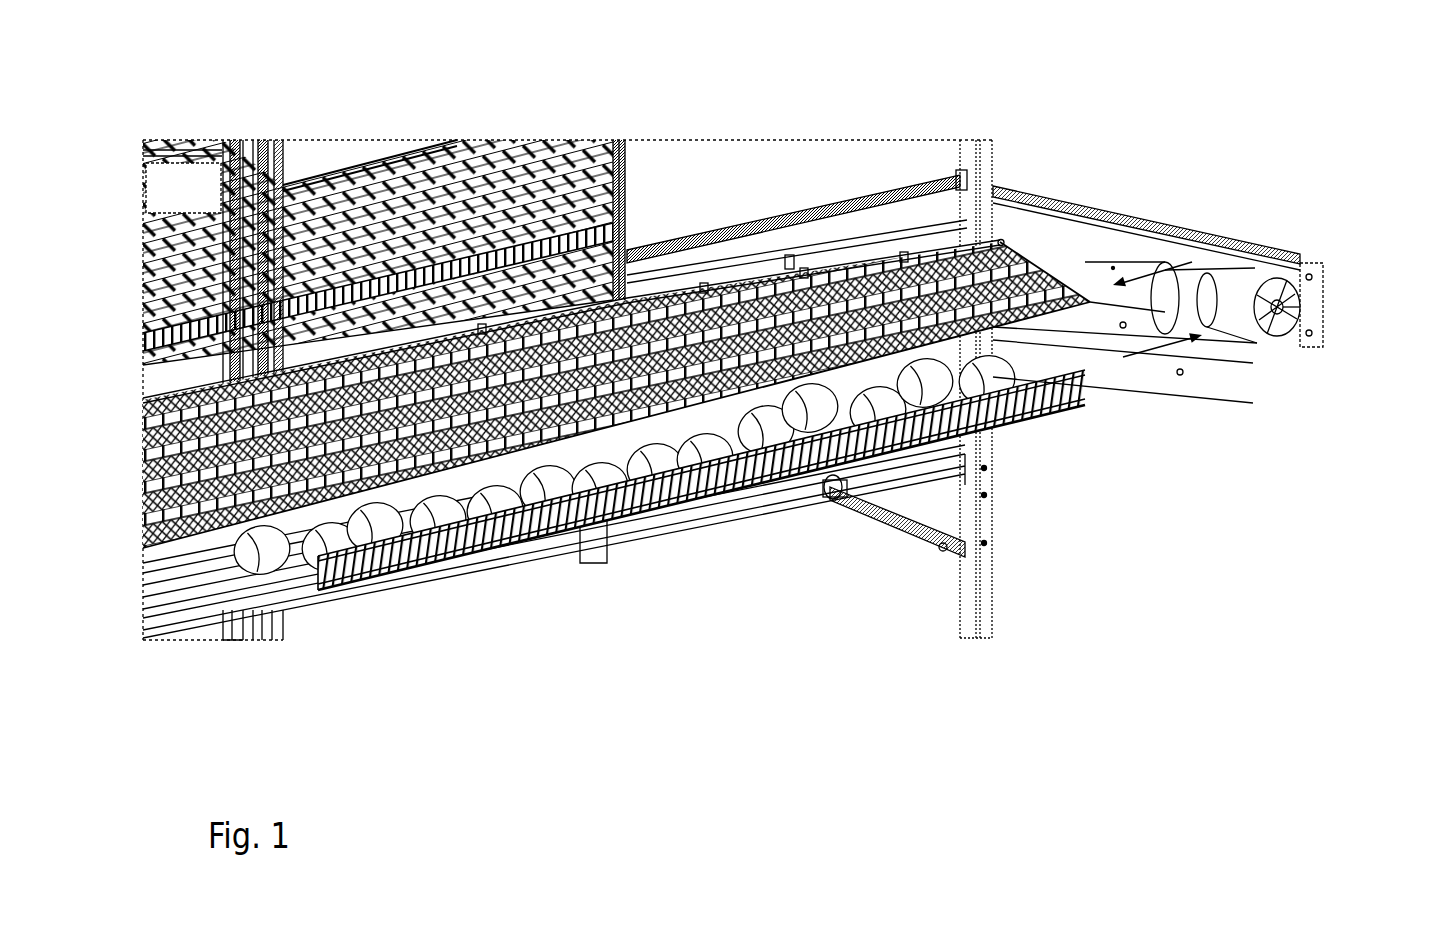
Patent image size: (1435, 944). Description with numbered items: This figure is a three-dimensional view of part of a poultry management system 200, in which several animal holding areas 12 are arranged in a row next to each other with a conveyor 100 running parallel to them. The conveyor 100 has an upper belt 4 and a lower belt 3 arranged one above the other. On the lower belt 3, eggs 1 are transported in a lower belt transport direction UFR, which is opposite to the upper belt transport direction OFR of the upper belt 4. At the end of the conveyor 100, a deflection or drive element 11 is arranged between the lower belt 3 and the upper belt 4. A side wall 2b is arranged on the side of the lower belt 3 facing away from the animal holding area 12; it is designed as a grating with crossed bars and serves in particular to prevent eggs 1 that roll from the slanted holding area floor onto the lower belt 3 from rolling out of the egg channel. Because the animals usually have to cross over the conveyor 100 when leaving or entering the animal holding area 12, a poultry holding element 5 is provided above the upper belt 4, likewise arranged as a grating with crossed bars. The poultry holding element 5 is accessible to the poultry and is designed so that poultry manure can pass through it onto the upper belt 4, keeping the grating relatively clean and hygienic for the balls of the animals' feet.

The eggs 1 is at (1030, 410).
The side wall 2b is at (1084, 378).
The lower belt 3 is at (1175, 362).
The upper belt 4 is at (1114, 266).
The poultry holding element 5 is at (1010, 246).
The deflection or drive element 11 is at (1314, 249).
The animal holding area 12 is at (492, 123).
The conveyor 100 is at (1338, 313).
The poultry management system 200 is at (614, 612).
The upper belt transport direction OFR is at (1158, 272).
The lower belt transport direction UFR is at (1157, 350).